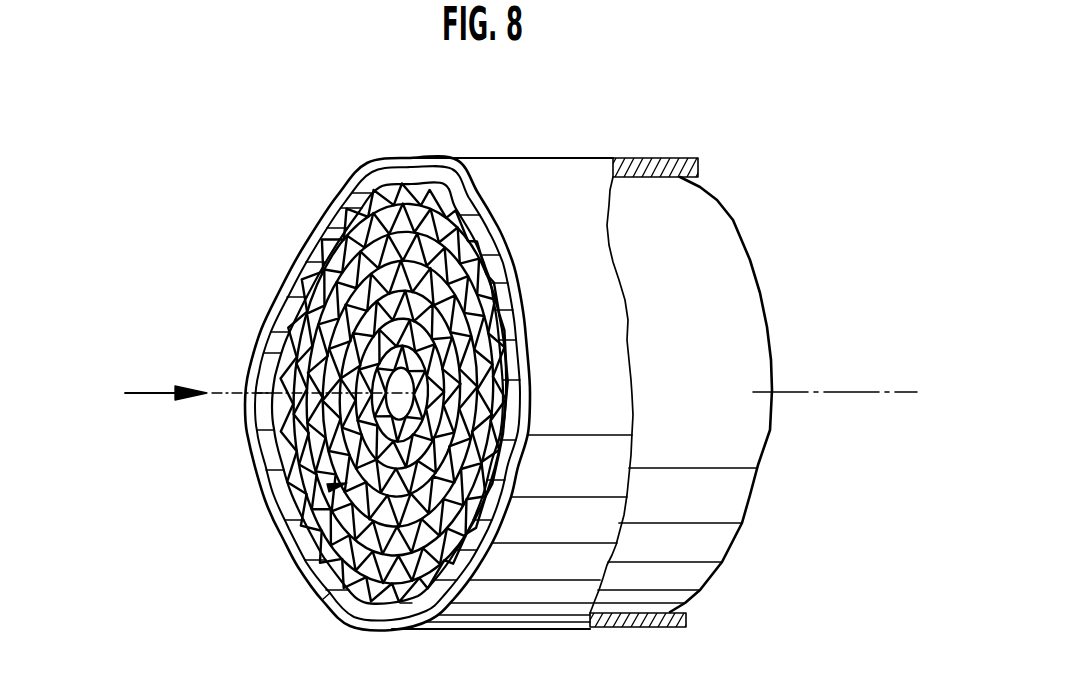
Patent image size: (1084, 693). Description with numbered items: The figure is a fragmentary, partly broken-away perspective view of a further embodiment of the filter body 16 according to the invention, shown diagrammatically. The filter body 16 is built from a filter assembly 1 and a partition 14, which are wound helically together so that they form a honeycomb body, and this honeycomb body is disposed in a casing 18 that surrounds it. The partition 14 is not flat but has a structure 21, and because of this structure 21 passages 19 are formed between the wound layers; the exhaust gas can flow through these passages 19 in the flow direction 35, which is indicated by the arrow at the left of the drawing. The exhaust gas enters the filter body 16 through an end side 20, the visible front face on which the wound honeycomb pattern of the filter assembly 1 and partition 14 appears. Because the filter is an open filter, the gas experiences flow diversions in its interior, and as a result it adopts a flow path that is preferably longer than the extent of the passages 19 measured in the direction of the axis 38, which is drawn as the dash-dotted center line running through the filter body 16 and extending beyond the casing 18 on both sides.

The filter assembly 1 is at (448, 198).
The partition 14 is at (437, 185).
The filter body 16 is at (257, 268).
The casing 18 is at (668, 158).
The passages 19 is at (407, 593).
The end side 20 is at (330, 487).
The structure 21 is at (323, 600).
The flow direction 35 is at (144, 392).
The axis 38 is at (874, 392).